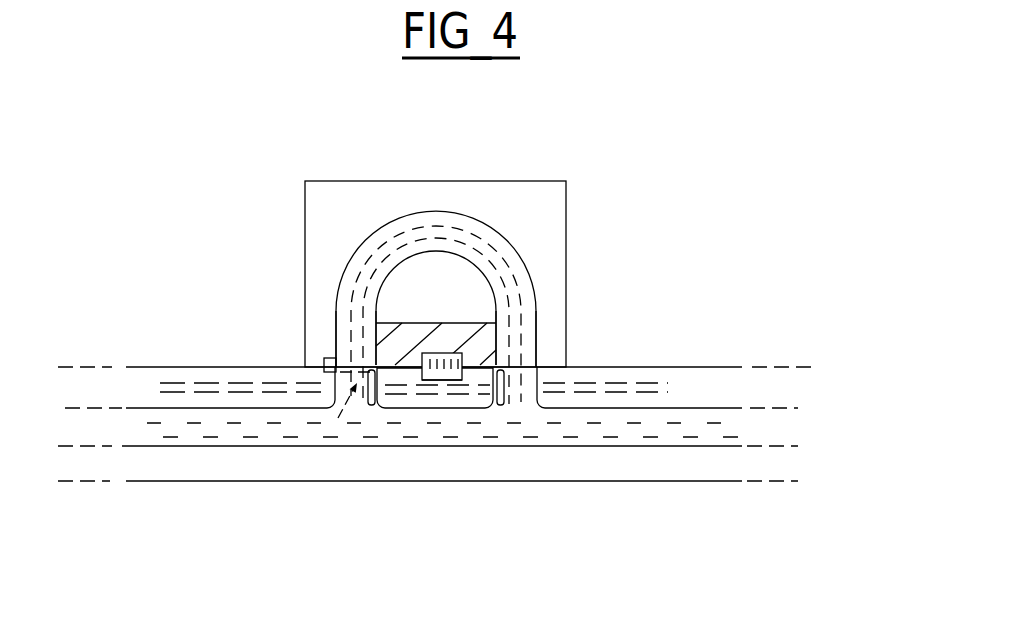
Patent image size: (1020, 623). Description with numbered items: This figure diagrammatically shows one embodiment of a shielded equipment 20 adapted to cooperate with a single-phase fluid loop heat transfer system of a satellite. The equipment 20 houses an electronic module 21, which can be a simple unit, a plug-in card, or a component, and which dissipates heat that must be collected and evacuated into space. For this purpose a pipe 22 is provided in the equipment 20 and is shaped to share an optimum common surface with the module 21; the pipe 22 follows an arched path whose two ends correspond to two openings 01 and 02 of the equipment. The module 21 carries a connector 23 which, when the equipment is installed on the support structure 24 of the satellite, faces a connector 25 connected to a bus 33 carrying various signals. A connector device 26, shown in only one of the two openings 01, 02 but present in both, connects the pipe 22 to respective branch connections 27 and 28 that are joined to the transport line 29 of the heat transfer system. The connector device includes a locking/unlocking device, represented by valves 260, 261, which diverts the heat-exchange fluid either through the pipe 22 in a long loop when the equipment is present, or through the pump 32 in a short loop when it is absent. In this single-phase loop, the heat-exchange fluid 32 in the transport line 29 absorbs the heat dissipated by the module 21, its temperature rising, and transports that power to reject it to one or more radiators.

The equipment 20 is at (566, 200).
The pipe 22 is at (372, 230).
The electronic module 21 is at (405, 323).
The connector 23 is at (442, 353).
The connector 25 is at (440, 380).
The connector device 26 is at (357, 355).
The branch connection 27 is at (337, 388).
The branch connection 28 is at (537, 374).
The transport line 29 is at (303, 446).
The support structure 24 is at (245, 481).
The valve 260 is at (372, 405).
The valve 261 is at (503, 405).
The opening 01 is at (363, 350).
The opening 02 is at (521, 350).
The heat-exchange fluid 32 is at (613, 435).
The bus 33 is at (657, 383).